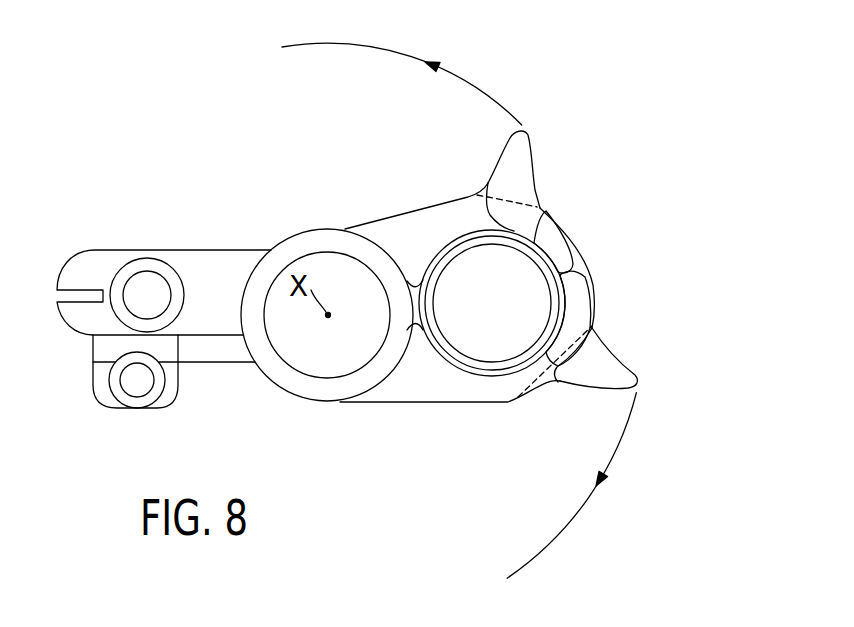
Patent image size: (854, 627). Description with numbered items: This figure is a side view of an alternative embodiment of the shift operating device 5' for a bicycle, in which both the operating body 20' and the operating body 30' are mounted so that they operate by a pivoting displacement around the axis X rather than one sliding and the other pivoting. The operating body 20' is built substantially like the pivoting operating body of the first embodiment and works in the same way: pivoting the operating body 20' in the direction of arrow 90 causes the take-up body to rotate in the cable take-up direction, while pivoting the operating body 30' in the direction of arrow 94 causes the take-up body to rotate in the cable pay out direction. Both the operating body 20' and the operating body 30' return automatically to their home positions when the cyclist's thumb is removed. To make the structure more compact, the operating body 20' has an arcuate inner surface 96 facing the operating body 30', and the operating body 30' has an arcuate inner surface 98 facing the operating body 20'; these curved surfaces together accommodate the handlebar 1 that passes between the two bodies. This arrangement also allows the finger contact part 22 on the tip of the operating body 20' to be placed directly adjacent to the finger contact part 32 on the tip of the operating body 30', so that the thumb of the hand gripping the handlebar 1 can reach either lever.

The shift operating device 5' is at (164, 269).
The operating body 20' is at (417, 270).
The operating body 30' is at (450, 428).
The first finger contact part 22 is at (535, 188).
The second finger contact part 32 is at (613, 355).
The arcuate inner surface 96 is at (458, 237).
The arcuate inner surface 98 is at (500, 368).
The handlebar 1 is at (545, 277).
The arrow 90 is at (458, 78).
The arrow 94 is at (557, 535).